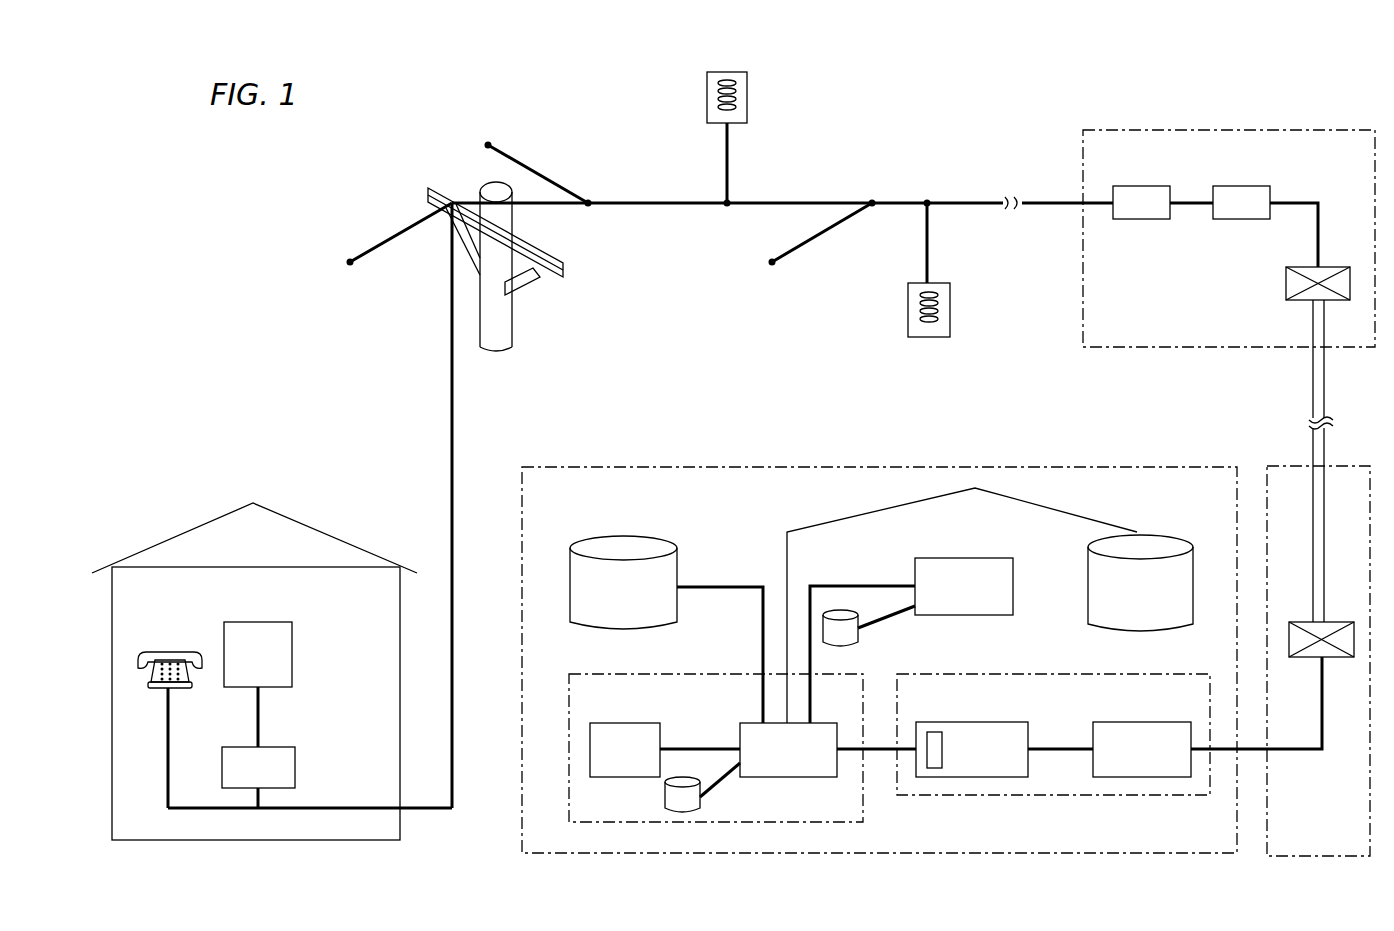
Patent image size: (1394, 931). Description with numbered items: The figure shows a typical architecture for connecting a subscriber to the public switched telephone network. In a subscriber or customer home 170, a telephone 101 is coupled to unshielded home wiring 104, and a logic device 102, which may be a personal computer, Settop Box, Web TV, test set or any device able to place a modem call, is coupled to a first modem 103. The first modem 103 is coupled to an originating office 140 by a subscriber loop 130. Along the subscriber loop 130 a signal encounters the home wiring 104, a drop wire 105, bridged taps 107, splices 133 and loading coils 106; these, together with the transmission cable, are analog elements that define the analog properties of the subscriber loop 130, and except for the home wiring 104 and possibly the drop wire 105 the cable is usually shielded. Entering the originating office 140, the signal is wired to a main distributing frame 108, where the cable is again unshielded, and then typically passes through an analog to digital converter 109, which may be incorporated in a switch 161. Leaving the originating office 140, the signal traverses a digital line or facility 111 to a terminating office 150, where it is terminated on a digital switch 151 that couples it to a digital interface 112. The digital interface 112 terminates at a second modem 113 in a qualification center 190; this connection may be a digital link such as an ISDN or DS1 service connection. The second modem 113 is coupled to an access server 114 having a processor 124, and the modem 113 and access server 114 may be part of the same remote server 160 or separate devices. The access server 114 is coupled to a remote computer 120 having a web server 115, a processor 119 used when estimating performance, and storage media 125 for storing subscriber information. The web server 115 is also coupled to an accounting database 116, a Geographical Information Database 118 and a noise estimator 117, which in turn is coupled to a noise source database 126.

The telephone 101 is at (170, 647).
The logic device 102 is at (293, 637).
The first modem 103 is at (295, 757).
The unshielded home wiring 104 is at (337, 808).
The drop wire 105 is at (452, 395).
The loading coils 106 is at (707, 95).
The bridged taps 107 is at (390, 232).
The main distributing frame 108 is at (1163, 219).
The analog to digital converter 109 is at (1243, 186).
The digital line or facility 111 is at (1308, 393).
The digital interface 112 is at (1317, 752).
The second modem 113 is at (1143, 722).
The access server 114 is at (966, 722).
The web server 115 is at (790, 777).
The accounting database 116 is at (623, 536).
The noise estimator 117 is at (972, 558).
The Geographical Information Database 118 is at (1137, 532).
The processor 119 is at (627, 723).
The remote computer 120 is at (863, 795).
The processor 124 is at (942, 768).
The storage media 125 is at (665, 806).
The noise source database 126 is at (858, 640).
The subscriber loop 130 is at (965, 203).
The splices 133 is at (681, 202).
The originating office 140 is at (1269, 130).
The terminating office 150 is at (1277, 466).
The digital switch 151 is at (1337, 622).
The remote server 160 is at (1045, 674).
The switch 161 is at (1286, 283).
The subscriber or customer home 170 is at (188, 530).
The qualification center 190 is at (1001, 467).